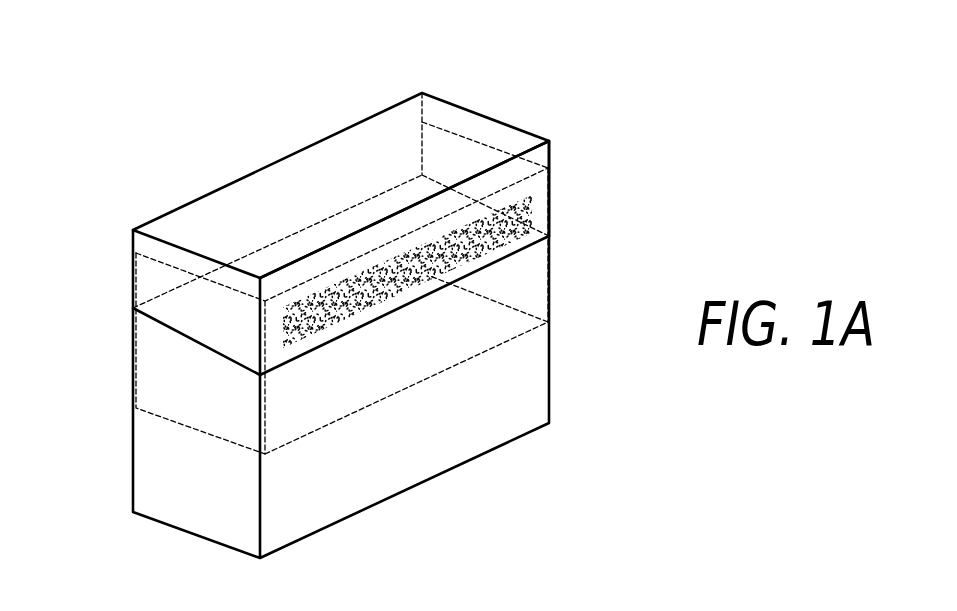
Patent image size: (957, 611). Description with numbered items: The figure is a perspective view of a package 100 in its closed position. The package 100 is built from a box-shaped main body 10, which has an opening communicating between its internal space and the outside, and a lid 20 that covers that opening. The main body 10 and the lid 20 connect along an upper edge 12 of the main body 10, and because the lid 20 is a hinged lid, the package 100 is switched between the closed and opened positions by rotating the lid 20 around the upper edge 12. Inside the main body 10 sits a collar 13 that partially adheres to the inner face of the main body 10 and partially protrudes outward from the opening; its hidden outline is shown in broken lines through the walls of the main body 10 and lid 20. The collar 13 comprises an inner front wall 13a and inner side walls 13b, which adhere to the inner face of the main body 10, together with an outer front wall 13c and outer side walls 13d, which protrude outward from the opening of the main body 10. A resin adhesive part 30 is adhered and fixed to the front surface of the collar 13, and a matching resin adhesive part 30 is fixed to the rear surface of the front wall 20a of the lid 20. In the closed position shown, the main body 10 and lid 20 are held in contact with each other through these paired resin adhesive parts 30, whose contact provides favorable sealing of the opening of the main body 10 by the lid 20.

The package 100 is at (249, 106).
The main body 10 is at (183, 467).
The upper edge 12 is at (316, 222).
The collar 13 is at (173, 392).
The inner front wall 13a is at (468, 332).
The inner side walls 13b is at (163, 355).
The outer front wall 13c is at (538, 187).
The outer side walls 13d is at (465, 162).
The lid 20 is at (248, 212).
The front wall 20a is at (537, 163).
The resin adhesive part 30 is at (533, 220).